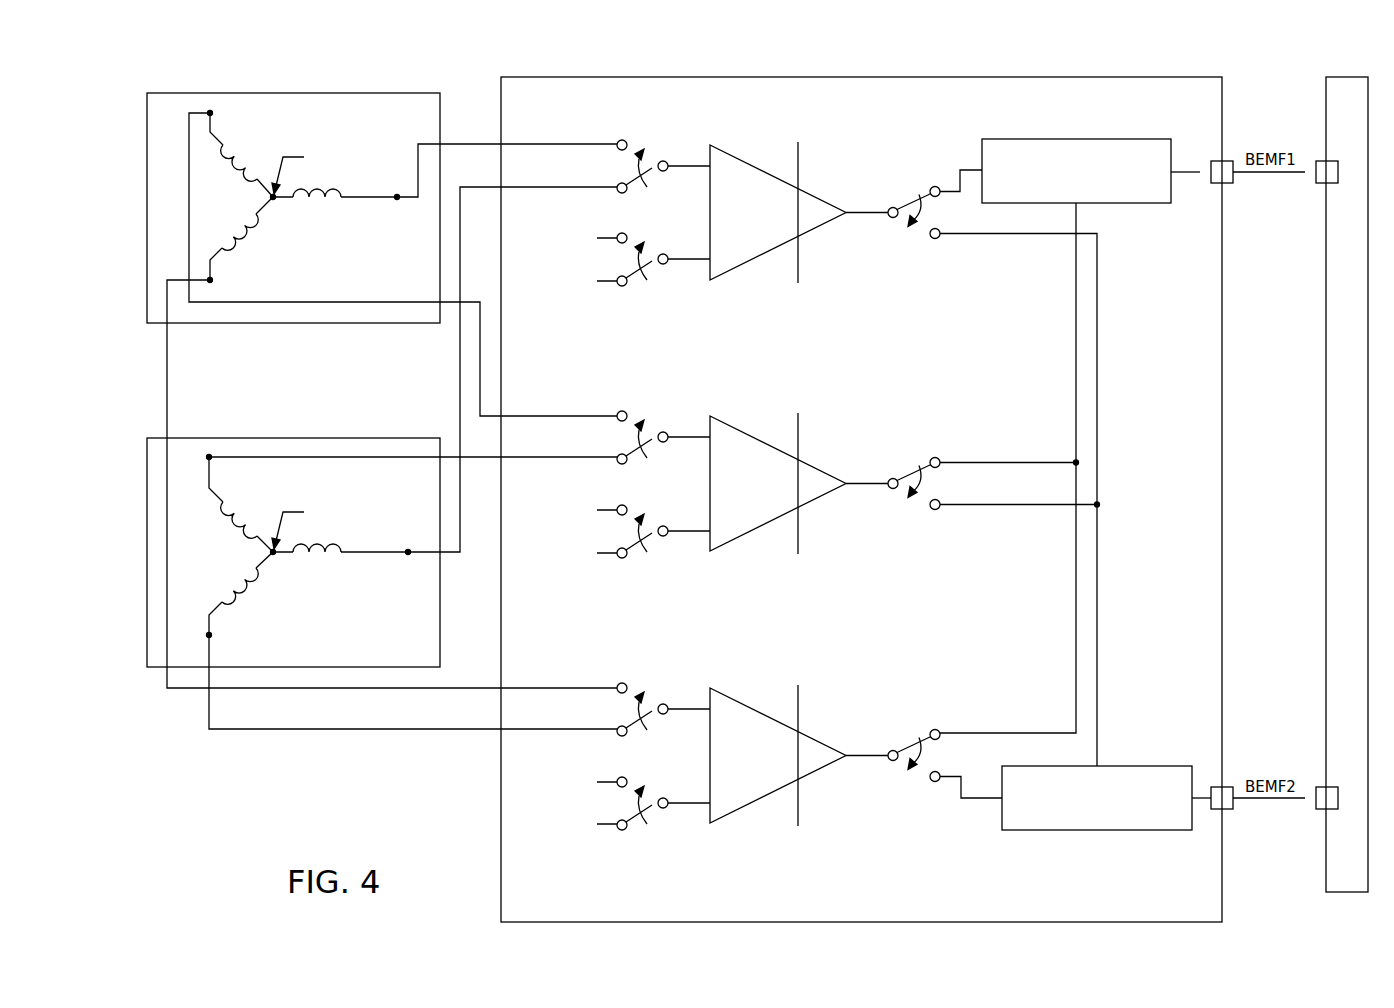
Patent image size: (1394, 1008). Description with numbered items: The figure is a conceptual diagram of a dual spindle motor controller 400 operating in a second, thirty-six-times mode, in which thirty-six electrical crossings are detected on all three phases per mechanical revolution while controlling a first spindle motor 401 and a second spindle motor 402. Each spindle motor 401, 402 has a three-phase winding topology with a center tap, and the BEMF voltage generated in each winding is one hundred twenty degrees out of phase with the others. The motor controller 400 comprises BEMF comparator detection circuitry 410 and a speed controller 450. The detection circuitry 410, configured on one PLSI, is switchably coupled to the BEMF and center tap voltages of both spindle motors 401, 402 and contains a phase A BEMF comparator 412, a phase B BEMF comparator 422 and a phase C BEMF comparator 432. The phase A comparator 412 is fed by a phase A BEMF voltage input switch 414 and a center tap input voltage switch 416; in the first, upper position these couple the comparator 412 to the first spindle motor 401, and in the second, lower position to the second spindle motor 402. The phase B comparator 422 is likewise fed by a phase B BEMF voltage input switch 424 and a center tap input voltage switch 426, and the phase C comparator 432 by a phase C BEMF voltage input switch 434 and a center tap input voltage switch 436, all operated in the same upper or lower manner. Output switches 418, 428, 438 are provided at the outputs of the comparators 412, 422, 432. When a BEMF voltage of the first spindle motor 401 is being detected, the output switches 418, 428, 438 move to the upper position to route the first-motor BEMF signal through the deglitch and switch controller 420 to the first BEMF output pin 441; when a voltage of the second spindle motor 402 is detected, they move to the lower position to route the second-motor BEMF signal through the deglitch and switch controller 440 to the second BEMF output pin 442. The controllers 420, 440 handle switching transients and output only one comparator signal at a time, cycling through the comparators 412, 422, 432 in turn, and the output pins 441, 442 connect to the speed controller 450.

The dual spindle motor controller 400 is at (1252, 40).
The first spindle motor 401 is at (156, 88).
The second spindle motor 402 is at (394, 434).
The BEMF comparator detection circuitry 410 is at (812, 74).
The phase A BEMF comparator 412 is at (741, 224).
The phase A BEMF voltage input switch 414 is at (650, 178).
The center tap input voltage switch 416 is at (650, 271).
The output switch 418 is at (910, 204).
The deglitch and switch controller 420 is at (1086, 139).
The phase B BEMF comparator 422 is at (741, 495).
The phase B BEMF voltage input switch 424 is at (650, 449).
The center tap input voltage switch 426 is at (650, 543).
The output switch 428 is at (910, 475).
The phase C BEMF comparator 432 is at (741, 767).
The phase C BEMF voltage input switch 434 is at (650, 720).
The center tap input voltage switch 436 is at (650, 815).
The output switch 438 is at (910, 747).
The deglitch and switch controller 440 is at (1107, 830).
The first BEMF output pin 441 is at (1233, 183).
The second BEMF output pin 442 is at (1233, 809).
The speed controller 450 is at (1325, 480).